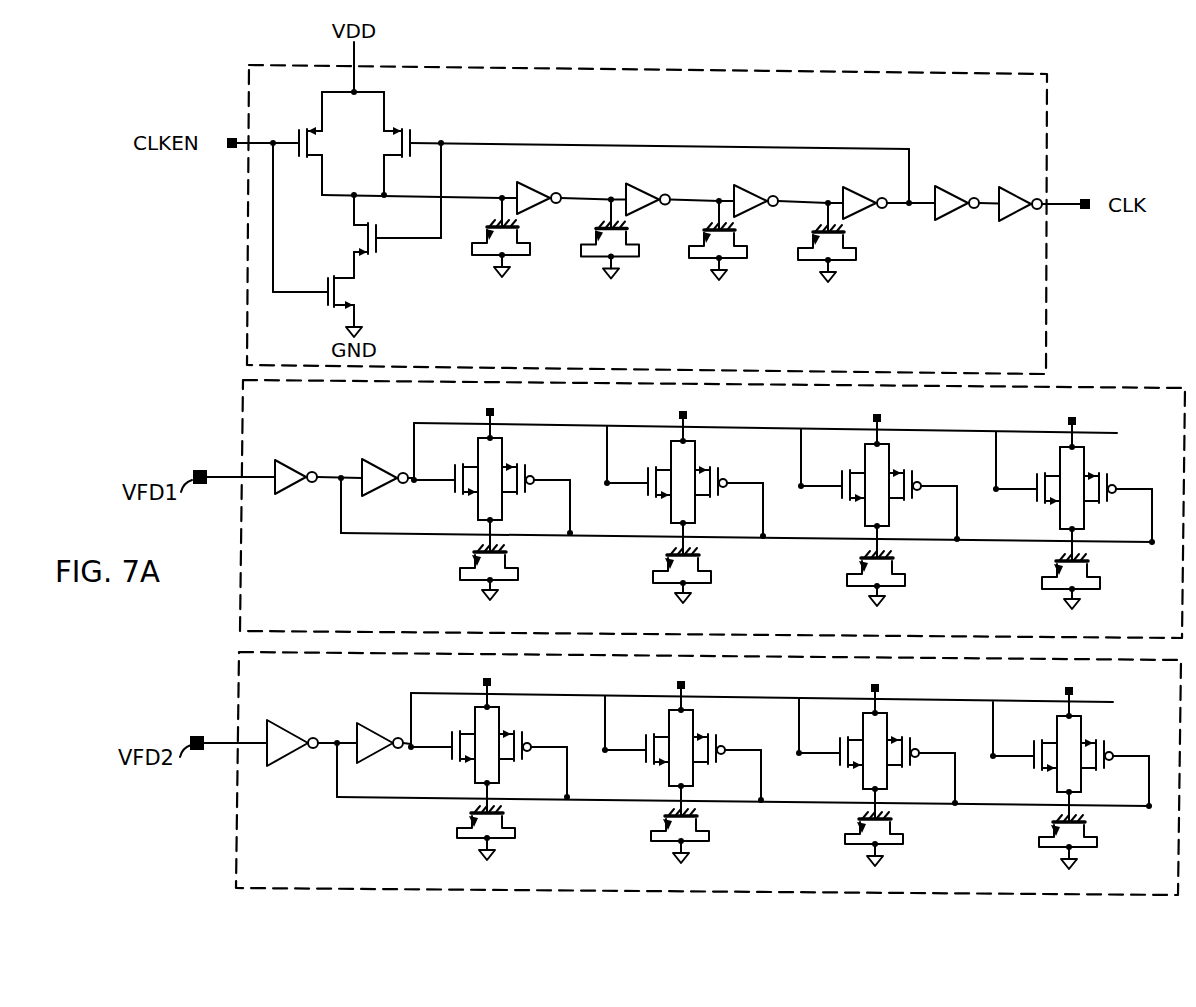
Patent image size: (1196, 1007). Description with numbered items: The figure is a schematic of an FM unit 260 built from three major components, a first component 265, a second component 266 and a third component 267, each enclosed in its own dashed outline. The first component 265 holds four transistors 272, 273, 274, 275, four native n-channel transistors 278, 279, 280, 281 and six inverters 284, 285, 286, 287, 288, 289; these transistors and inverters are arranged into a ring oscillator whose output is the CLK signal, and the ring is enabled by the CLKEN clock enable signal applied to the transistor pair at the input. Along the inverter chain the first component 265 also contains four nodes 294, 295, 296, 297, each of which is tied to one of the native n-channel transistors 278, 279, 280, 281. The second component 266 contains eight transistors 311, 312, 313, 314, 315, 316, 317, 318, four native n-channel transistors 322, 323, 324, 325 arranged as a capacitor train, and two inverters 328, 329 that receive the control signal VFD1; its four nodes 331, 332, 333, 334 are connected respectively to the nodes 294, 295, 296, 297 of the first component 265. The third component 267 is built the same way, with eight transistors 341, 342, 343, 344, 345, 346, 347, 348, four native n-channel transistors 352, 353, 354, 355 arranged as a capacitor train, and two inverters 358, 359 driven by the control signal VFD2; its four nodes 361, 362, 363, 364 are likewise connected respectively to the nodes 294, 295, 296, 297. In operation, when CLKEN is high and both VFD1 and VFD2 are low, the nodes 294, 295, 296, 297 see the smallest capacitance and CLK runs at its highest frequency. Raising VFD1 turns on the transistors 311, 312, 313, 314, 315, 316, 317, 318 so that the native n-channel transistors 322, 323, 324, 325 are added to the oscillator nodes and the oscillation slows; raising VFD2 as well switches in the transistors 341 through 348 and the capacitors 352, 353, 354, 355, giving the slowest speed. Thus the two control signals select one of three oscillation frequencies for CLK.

The FM unit 260 is at (146, 790).
The first component 265 is at (246, 231).
The second component 266 is at (235, 406).
The third component 267 is at (237, 682).
The transistor 272 is at (298, 131).
The transistor 273 is at (411, 133).
The transistor 274 is at (378, 231).
The transistor 275 is at (327, 280).
The native n-channel transistor 278 is at (526, 250).
The native n-channel transistor 279 is at (634, 252).
The native n-channel transistor 280 is at (742, 253).
The native n-channel transistor 281 is at (851, 255).
The inverter 284 is at (540, 185).
The inverter 285 is at (650, 188).
The inverter 286 is at (758, 189).
The inverter 287 is at (867, 188).
The inverter 288 is at (949, 194).
The inverter 289 is at (1012, 196).
The node 294 is at (483, 180).
The node 295 is at (616, 181).
The node 296 is at (720, 182).
The node 297 is at (820, 185).
The transistor 311 is at (454, 466).
The transistor 312 is at (529, 465).
The transistor 313 is at (647, 469).
The transistor 314 is at (722, 468).
The transistor 315 is at (841, 472).
The transistor 316 is at (916, 471).
The transistor 317 is at (1036, 475).
The transistor 318 is at (1111, 474).
The native n-channel transistor 322 is at (505, 574).
The native n-channel transistor 323 is at (698, 577).
The native n-channel transistor 324 is at (892, 580).
The native n-channel transistor 325 is at (1087, 583).
The inverter 328 is at (290, 462).
The inverter 329 is at (377, 463).
The node 331 is at (514, 403).
The node 332 is at (707, 406).
The node 333 is at (901, 409).
The node 334 is at (1096, 412).
The transistor 341 is at (450, 734).
The transistor 342 is at (526, 733).
The transistor 343 is at (644, 737).
The transistor 344 is at (720, 736).
The transistor 345 is at (838, 740).
The transistor 346 is at (914, 739).
The transistor 347 is at (1032, 743).
The transistor 348 is at (1108, 742).
The native n-channel transistor 352 is at (505, 834).
The native n-channel transistor 353 is at (699, 837).
The native n-channel transistor 354 is at (893, 840).
The native n-channel transistor 355 is at (1087, 843).
The inverter 358 is at (287, 730).
The inverter 359 is at (375, 730).
The node 361 is at (512, 673).
The node 362 is at (706, 676).
The node 363 is at (900, 679).
The node 364 is at (1094, 682).